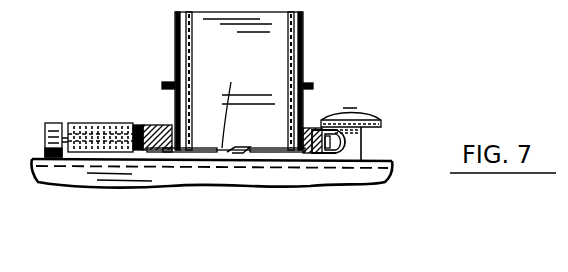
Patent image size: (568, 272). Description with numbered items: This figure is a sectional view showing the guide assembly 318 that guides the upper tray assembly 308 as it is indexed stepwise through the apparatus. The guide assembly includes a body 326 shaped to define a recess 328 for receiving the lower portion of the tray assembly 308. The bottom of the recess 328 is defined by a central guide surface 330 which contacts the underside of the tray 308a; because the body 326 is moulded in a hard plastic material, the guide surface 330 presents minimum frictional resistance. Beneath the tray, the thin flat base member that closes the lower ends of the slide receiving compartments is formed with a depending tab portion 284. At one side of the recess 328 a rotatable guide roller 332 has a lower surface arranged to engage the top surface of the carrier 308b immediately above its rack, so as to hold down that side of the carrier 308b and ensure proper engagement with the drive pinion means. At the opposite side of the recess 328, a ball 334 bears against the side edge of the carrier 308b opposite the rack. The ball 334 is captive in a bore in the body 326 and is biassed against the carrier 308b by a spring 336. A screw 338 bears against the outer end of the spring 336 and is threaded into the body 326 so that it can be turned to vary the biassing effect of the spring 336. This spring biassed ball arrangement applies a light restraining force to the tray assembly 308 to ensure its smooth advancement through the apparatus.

The depending tab portion 284 is at (250, 147).
The tray assembly 308 is at (312, 34).
The tray 308a is at (319, 81).
The carrier 308b is at (317, 117).
The guide assembly 318 is at (382, 139).
The body 326 is at (352, 152).
The recess 328 is at (144, 123).
The central guide surface 330 is at (246, 103).
The rotatable guide roller 332 is at (358, 108).
The ball 334 is at (132, 123).
The spring 336 is at (96, 123).
The screw 338 is at (50, 123).